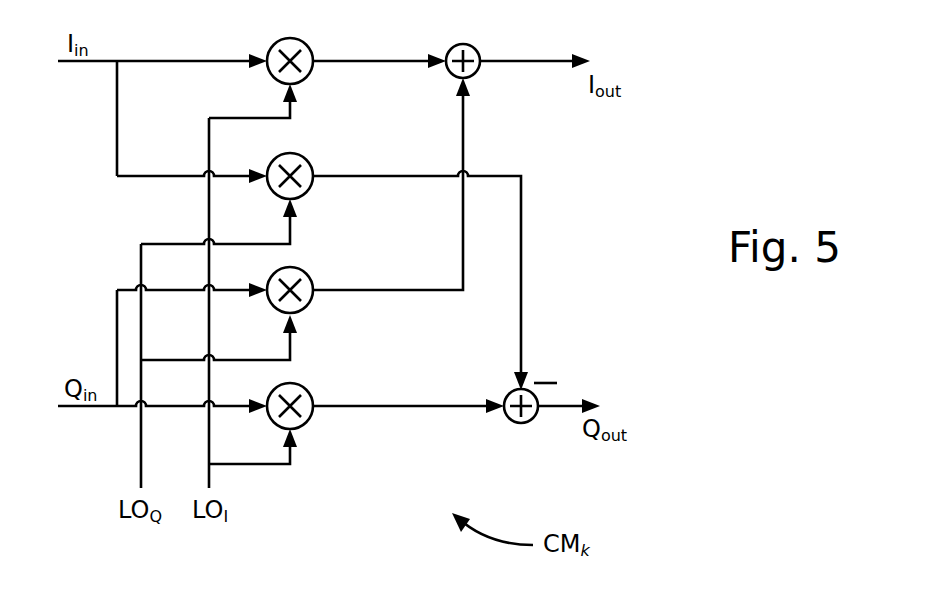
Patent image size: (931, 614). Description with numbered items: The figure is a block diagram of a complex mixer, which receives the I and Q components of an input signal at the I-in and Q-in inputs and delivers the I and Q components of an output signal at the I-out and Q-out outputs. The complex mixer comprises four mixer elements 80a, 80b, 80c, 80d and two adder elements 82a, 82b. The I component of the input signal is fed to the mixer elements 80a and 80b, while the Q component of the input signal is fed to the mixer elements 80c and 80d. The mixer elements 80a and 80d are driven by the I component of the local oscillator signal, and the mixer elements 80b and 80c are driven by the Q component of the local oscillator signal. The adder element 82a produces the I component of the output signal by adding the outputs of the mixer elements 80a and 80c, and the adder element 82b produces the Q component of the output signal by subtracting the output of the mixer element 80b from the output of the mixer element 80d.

The mixer element 80a is at (307, 48).
The mixer element 80b is at (307, 163).
The mixer element 80c is at (307, 277).
The mixer element 80d is at (307, 393).
The adder element 82a is at (479, 52).
The adder element 82b is at (508, 417).